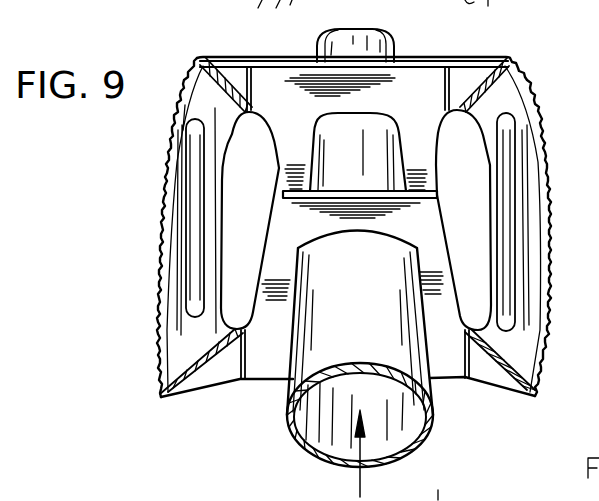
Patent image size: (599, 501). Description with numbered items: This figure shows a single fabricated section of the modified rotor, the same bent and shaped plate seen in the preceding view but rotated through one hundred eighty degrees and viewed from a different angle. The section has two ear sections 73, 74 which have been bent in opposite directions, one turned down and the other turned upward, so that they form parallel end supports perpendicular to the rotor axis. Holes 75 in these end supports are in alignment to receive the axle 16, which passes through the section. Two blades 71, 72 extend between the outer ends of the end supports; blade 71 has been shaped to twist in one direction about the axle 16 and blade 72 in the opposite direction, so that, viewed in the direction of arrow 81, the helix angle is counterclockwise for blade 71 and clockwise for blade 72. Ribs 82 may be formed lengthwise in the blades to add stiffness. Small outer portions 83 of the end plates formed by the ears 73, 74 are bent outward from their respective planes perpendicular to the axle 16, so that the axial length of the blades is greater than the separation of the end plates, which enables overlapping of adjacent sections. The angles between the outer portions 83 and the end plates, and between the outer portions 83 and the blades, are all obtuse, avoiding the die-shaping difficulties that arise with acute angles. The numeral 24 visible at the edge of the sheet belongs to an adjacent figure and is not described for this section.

The axle 16 is at (341, 313).
The adjacent figure element 24 is at (497, 500).
The blade 71 is at (545, 250).
The blade 72 is at (163, 211).
The ear section 73 is at (419, 226).
The ear section 74 is at (414, 152).
The holes 75 is at (306, 240).
The arrow 81 is at (510, 200).
The ribs 82 is at (195, 259).
The outer portions 83 is at (233, 70).